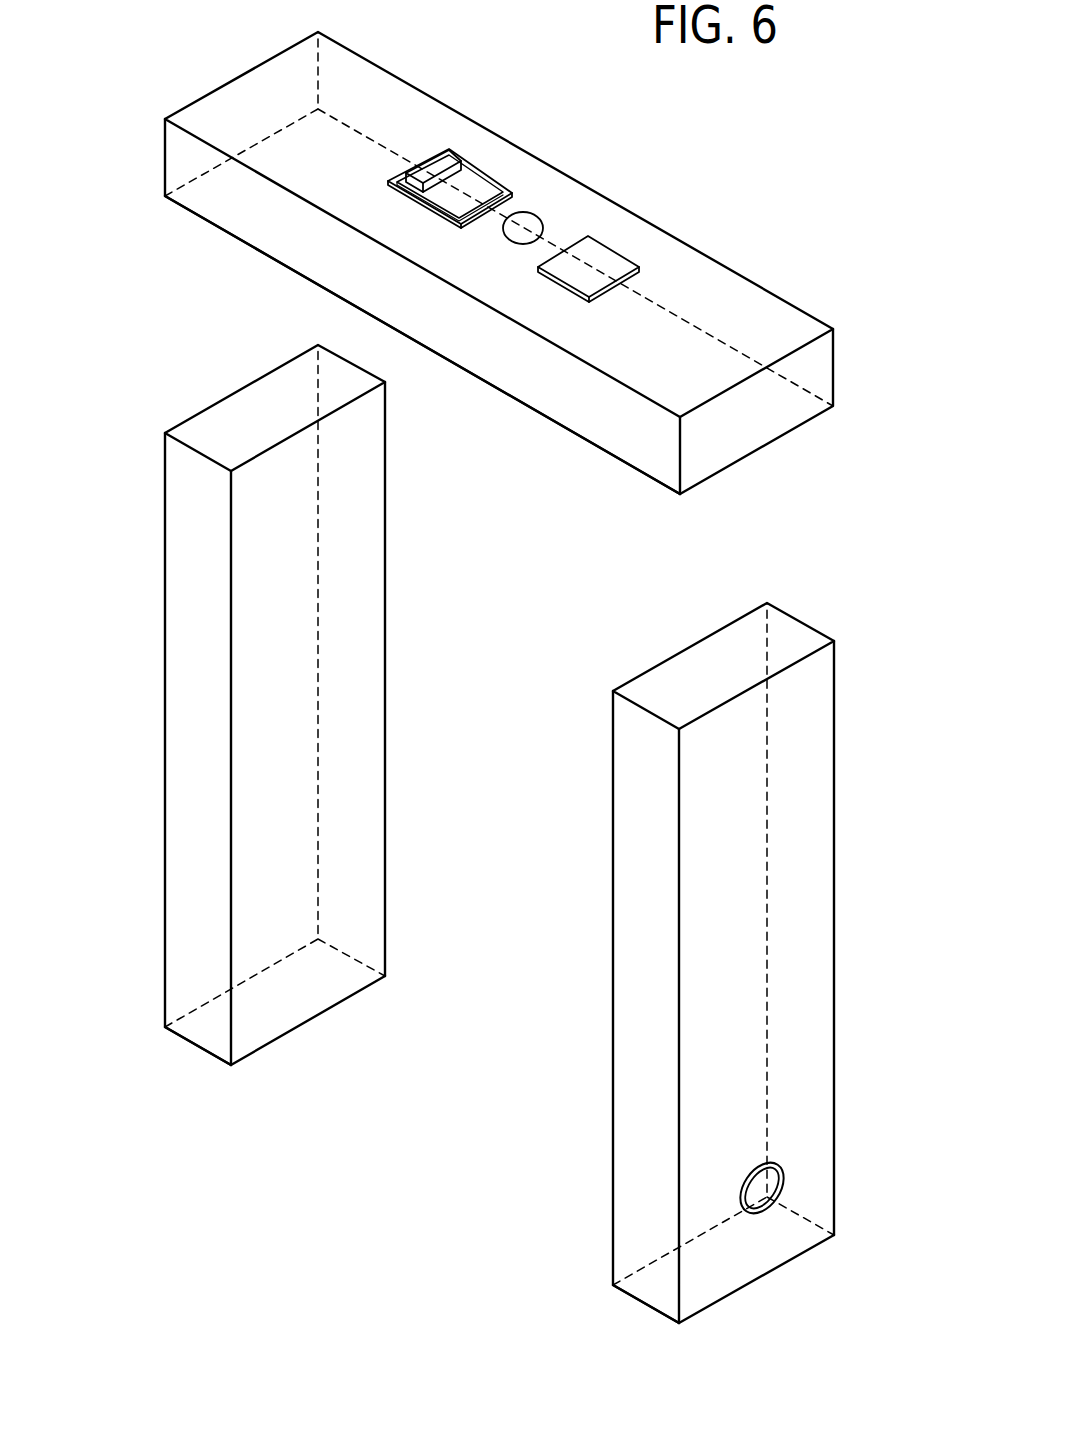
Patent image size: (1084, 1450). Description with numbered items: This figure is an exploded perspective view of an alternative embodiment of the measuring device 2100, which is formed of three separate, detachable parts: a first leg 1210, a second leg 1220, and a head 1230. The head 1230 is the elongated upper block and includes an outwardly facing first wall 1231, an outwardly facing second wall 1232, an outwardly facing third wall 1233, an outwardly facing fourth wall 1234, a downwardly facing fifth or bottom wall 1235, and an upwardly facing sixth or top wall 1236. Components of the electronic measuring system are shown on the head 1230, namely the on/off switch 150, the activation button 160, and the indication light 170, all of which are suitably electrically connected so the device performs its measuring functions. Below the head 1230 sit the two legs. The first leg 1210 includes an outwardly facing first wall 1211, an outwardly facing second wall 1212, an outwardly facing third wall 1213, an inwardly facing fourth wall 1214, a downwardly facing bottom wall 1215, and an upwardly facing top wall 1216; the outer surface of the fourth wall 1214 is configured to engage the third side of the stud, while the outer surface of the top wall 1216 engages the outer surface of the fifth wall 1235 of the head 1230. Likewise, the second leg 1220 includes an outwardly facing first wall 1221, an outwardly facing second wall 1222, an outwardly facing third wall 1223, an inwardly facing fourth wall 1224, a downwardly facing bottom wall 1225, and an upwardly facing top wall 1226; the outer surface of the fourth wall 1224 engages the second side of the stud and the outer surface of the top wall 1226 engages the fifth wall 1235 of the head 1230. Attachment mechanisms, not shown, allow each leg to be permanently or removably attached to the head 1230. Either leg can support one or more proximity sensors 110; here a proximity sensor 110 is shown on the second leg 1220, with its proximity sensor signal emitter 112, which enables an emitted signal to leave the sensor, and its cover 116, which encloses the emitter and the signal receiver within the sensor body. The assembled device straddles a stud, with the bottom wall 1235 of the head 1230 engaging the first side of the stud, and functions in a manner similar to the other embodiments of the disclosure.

The measuring device 2100 is at (346, 1250).
The head 1230 is at (216, 63).
The first wall 1231 is at (210, 202).
The second wall 1232 is at (163, 153).
The third wall 1233 is at (835, 357).
The fourth wall 1234 is at (760, 422).
The fifth wall 1235 is at (527, 407).
The top wall 1236 is at (715, 287).
The on/off switch 150 is at (440, 163).
The activation button 160 is at (603, 257).
The indication light 170 is at (532, 214).
The first leg 1210 is at (141, 742).
The first wall 1211 is at (192, 552).
The second wall 1212 is at (163, 505).
The third wall 1213 is at (385, 535).
The fourth wall 1214 is at (348, 615).
The bottom wall 1215 is at (285, 1033).
The top wall 1216 is at (232, 422).
The second leg 1220 is at (589, 1002).
The first wall 1221 is at (640, 812).
The second wall 1222 is at (800, 878).
The third wall 1223 is at (835, 790).
The fourth wall 1224 is at (612, 767).
The bottom wall 1225 is at (733, 1293).
The top wall 1226 is at (682, 680).
The proximity sensor 110 is at (770, 1208).
The proximity sensor signal emitter 112 is at (772, 1177).
The cover 116 is at (782, 1198).